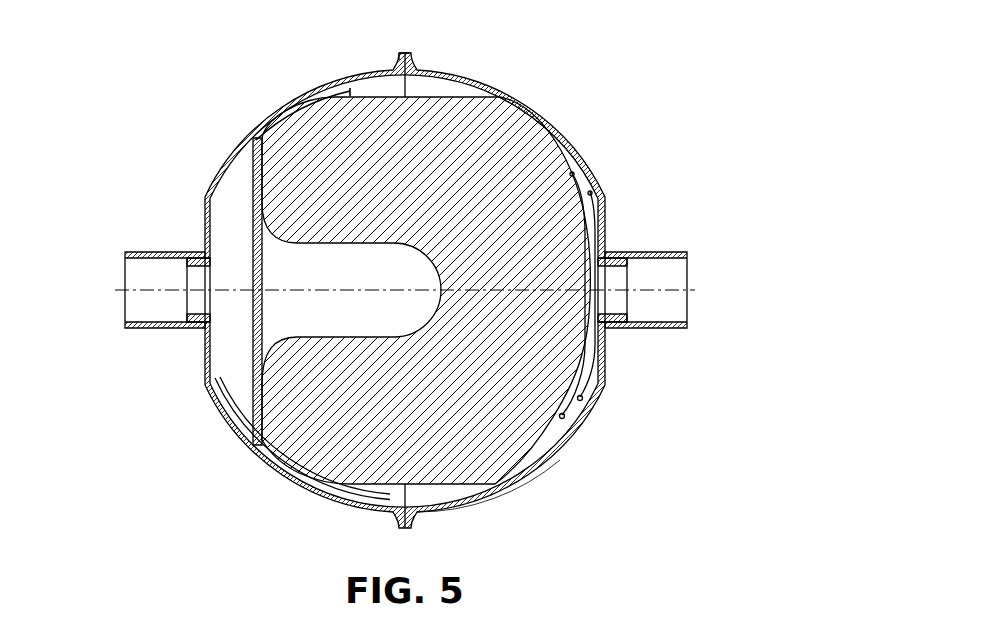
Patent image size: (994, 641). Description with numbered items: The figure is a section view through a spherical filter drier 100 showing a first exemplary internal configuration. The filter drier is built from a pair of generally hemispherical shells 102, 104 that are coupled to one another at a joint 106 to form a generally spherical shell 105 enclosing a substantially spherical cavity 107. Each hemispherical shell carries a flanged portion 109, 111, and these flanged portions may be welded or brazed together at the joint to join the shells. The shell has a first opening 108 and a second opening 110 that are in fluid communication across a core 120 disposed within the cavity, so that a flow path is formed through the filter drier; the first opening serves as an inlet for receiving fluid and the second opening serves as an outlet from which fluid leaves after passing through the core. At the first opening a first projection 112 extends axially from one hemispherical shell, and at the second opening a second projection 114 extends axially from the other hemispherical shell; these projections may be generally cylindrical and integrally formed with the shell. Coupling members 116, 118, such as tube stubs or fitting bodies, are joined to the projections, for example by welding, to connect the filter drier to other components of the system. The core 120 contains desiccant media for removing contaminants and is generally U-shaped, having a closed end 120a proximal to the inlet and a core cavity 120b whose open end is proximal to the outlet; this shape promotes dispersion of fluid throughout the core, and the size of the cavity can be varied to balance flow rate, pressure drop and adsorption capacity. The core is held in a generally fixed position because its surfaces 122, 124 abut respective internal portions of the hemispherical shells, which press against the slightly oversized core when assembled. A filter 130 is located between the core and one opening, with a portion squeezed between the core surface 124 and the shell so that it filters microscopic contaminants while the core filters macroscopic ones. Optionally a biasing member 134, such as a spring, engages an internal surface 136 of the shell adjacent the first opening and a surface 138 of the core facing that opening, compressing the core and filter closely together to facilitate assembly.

The spherical filter drier 100 is at (617, 68).
The first hemispherical shell 102 is at (515, 100).
The second hemispherical shell 104 is at (257, 135).
The spherical shell 105 is at (312, 535).
The joint 106 is at (411, 50).
The spherical cavity 107 is at (232, 208).
The first opening 108 is at (632, 278).
The flanged portion 109 is at (418, 60).
The second opening 110 is at (182, 277).
The flanged portion 111 is at (400, 58).
The first projection 112 is at (607, 312).
The second projection 114 is at (200, 317).
The coupling member 116 is at (655, 252).
The coupling member 118 is at (139, 253).
The core 120 is at (290, 430).
The closed end of core 120a is at (572, 400).
The core cavity 120b is at (287, 315).
The core surface 122 is at (527, 470).
The core surface 124 is at (305, 484).
The filter 130 is at (255, 198).
The biasing member 134 is at (585, 172).
The internal surface of shell 136 is at (595, 192).
The core surface 138 is at (562, 425).